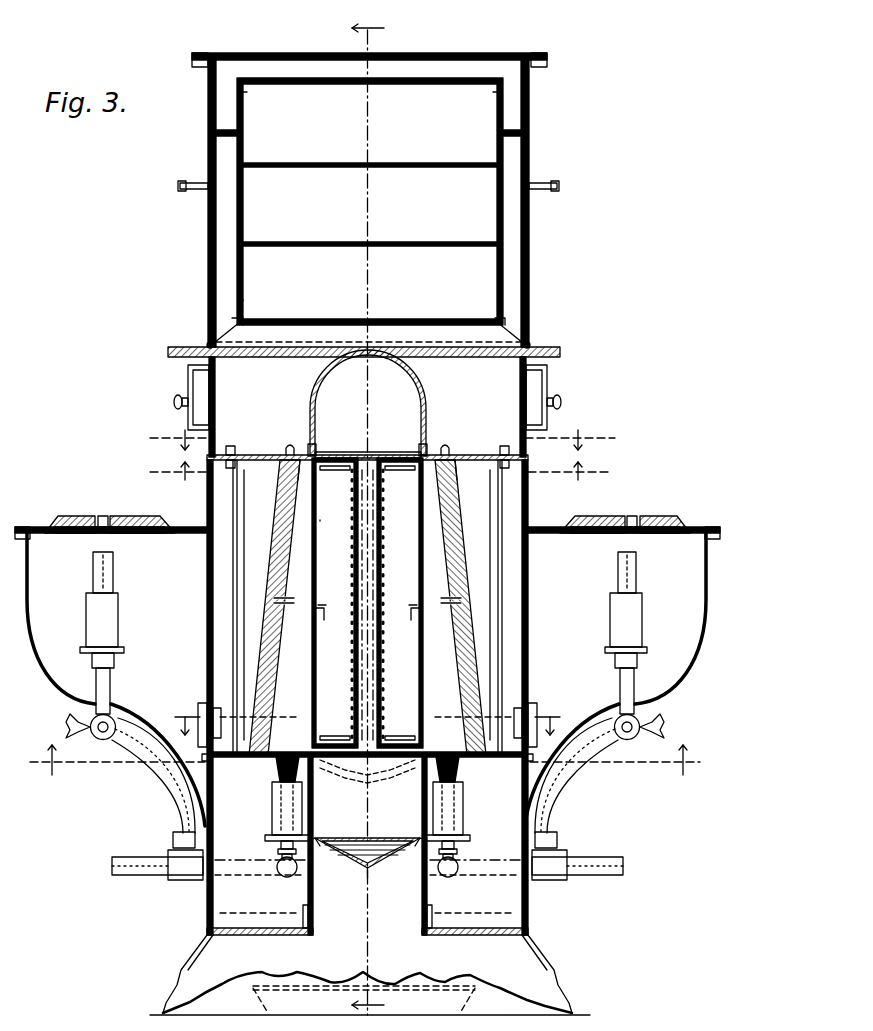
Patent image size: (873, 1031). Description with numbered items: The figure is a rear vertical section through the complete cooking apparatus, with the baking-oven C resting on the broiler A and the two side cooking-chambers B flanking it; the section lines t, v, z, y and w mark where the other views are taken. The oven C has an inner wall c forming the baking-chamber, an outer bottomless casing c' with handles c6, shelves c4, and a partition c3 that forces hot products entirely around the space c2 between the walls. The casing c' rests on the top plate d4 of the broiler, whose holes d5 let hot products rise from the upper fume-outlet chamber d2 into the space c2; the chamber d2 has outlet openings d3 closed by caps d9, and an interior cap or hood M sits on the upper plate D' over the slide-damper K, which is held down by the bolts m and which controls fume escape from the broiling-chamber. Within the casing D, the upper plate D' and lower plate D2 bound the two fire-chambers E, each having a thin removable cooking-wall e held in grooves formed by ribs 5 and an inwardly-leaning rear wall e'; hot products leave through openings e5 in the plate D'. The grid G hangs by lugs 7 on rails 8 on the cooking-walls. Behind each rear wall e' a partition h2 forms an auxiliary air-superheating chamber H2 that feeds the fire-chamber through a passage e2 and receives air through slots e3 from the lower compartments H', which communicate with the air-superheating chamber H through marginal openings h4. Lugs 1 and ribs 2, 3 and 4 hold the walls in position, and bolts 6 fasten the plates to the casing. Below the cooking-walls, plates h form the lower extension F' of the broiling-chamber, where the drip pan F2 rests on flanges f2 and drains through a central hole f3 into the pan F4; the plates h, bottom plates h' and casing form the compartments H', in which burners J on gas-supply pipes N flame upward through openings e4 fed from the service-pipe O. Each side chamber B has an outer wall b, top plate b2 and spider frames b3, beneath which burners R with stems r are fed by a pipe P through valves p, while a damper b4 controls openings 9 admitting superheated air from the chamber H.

The section line t t is at (368, 516).
The outer casing of oven c' is at (370, 190).
The space between oven walls c2 is at (369, 192).
The inner wall or baking-chamber c is at (370, 193).
The shelves c4 is at (420, 164).
The baking-oven C is at (321, 249).
The partition c3 is at (368, 145).
The handles c6 is at (182, 186).
The holes in top plate d5 is at (272, 352).
The top plate of broiler d4 is at (186, 350).
The waste-product and fume-outlet chamber d2 is at (367, 407).
The outlet opening d3 is at (367, 397).
The caps d9 is at (190, 392).
The interior cap or hood M is at (314, 398).
The section line v v is at (380, 438).
The section line z z is at (380, 470).
The upper plate D' is at (367, 441).
The slide-damper K is at (378, 450).
The bolts or screws m is at (367, 438).
The hot-product openings e5 is at (290, 452).
The bolts or screws 6 is at (372, 595).
The ribs or flanges 4 is at (371, 465).
The casing D is at (362, 697).
The air-superheating chamber H is at (365, 606).
The fire-chambers E is at (367, 607).
The rear wall of fire-chamber e' is at (371, 589).
The passage e2 is at (286, 602).
The cooking-walls e is at (367, 603).
The broiler-grid G is at (360, 601).
The lower extension of broiling-chamber F' is at (365, 640).
The lugs 7 is at (367, 606).
The ribs or flanges 8 is at (368, 558).
The ribs or flanges 5 is at (366, 601).
The auxiliary air-superheating chamber H2 is at (371, 605).
The vertical wall or partition h2 is at (370, 579).
The openings 9 is at (367, 722).
The section line y y is at (367, 721).
The lower plate D2 is at (367, 768).
The lugs 1 is at (366, 739).
The rib or flange 2 is at (369, 739).
The rib or flange 3 is at (367, 739).
The downward extensions of air-superheating chamber H' is at (367, 844).
The vertical plates h is at (367, 864).
The bottom plates h' is at (369, 948).
The burners J is at (272, 808).
The gas-supply pipe N is at (362, 868).
The drip-receiving pan or funnel F2 is at (385, 866).
The central hole f3 is at (359, 882).
The lips or flanges f2 is at (330, 860).
The section line w w is at (364, 810).
The top wall or plate b2 is at (185, 527).
The side cooking-chambers B is at (366, 661).
The spider frames b3 is at (92, 523).
The round-mouthed tube or stem r is at (100, 572).
The burners R is at (92, 612).
The fuel supply pipe P is at (365, 758).
The cocks or valves p is at (365, 733).
The outer side wall b is at (56, 662).
The damper b4 is at (198, 708).
The service-pipe O is at (135, 873).
The broiler A is at (370, 967).
The pan F4 is at (364, 999).
The slots or passages e3 is at (373, 774).
The opening e4 is at (389, 783).
The marginal openings h4 is at (370, 788).